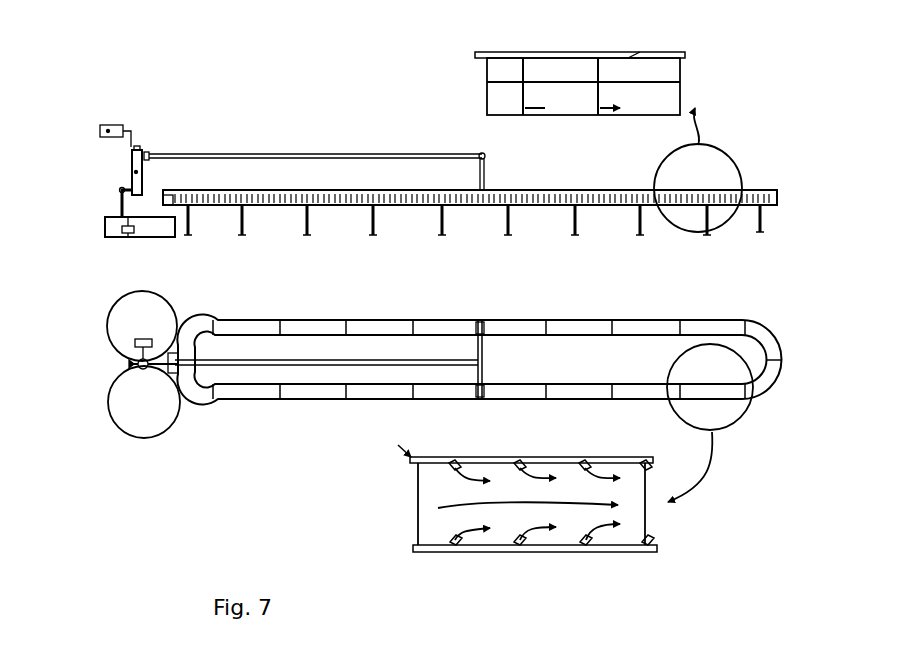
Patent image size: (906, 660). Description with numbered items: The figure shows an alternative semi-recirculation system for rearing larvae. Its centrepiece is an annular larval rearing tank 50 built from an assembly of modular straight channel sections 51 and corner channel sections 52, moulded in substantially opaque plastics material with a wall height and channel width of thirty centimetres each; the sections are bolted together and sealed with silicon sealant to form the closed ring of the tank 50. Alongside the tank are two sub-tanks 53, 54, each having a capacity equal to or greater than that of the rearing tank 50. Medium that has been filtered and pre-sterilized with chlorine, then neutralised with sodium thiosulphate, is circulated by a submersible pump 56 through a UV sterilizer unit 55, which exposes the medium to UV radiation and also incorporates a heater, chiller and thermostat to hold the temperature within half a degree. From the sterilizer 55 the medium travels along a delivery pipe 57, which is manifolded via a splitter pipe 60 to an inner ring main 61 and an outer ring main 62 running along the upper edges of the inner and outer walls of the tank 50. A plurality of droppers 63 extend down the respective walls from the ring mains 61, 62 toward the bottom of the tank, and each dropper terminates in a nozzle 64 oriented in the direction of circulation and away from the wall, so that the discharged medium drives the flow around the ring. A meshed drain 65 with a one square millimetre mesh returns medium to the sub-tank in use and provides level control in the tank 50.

The annular larval rearing tank 50 is at (370, 310).
The straight channel sections 51 is at (247, 323).
The corner channel sections 52 is at (762, 322).
The sub-tank 53 is at (120, 311).
The sub-tank 54 is at (122, 415).
The UV sterilizer unit 55 is at (122, 162).
The submersible pump 56 is at (120, 337).
The delivery pipe 57 is at (265, 372).
The splitter pipe 60 is at (484, 350).
The inner ring main 61 is at (583, 336).
The outer ring main 62 is at (500, 56).
The droppers 63 is at (522, 92).
The nozzle 64 is at (530, 112).
The meshed drain 65 is at (170, 195).